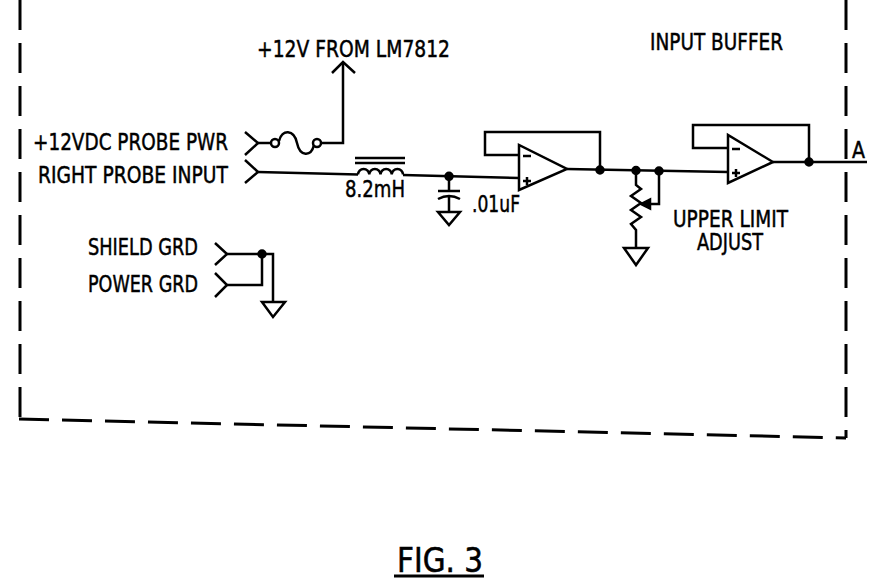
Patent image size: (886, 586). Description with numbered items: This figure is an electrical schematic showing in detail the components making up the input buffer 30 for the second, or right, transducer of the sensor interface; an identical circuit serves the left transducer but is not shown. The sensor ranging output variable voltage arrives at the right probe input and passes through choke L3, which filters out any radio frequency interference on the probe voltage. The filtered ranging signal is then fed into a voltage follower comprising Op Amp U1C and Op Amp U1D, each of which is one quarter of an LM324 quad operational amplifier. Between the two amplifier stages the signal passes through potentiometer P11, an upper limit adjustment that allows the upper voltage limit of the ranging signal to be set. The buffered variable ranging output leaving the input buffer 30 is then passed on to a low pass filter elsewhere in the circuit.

The input buffer 30 is at (432, 430).
The choke L3 is at (380, 153).
The Op Amp U1C is at (542, 161).
The Op Amp U1D is at (751, 154).
The potentiometer P11 is at (624, 217).